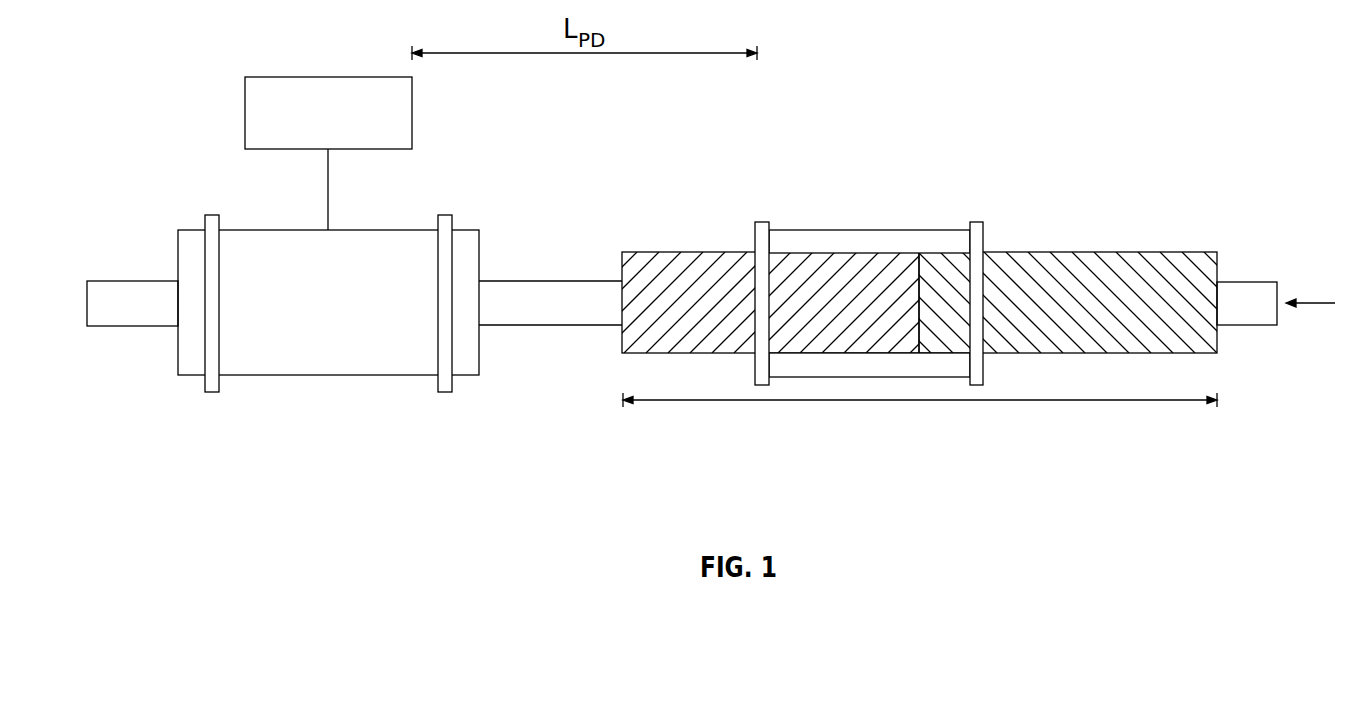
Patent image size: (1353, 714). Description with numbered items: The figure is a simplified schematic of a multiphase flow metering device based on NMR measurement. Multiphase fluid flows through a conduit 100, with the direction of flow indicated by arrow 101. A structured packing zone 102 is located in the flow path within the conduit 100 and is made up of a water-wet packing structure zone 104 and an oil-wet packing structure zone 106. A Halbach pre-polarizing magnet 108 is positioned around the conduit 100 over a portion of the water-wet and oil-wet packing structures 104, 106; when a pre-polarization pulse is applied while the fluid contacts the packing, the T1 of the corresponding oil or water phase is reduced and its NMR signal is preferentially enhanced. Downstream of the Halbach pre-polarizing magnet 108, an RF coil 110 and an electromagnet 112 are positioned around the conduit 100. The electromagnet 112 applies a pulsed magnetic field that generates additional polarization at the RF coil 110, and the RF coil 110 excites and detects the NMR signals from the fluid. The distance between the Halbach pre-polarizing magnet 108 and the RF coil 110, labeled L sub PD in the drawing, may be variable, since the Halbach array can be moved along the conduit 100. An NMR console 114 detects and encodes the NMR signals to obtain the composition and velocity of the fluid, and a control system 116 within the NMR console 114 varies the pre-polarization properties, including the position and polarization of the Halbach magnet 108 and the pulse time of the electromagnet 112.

The conduit 100 is at (1263, 326).
The arrow 101 is at (1313, 303).
The structured packing zone 102 is at (888, 402).
The water-wet packing structure zone 104 is at (1085, 252).
The oil-wet packing structure zone 106 is at (690, 252).
The Halbach pre-polarizing magnet 108 is at (870, 230).
The RF coil 110 is at (395, 377).
The electromagnet 112 is at (253, 377).
The NMR console 114 is at (412, 113).
The control system 116 is at (245, 112).